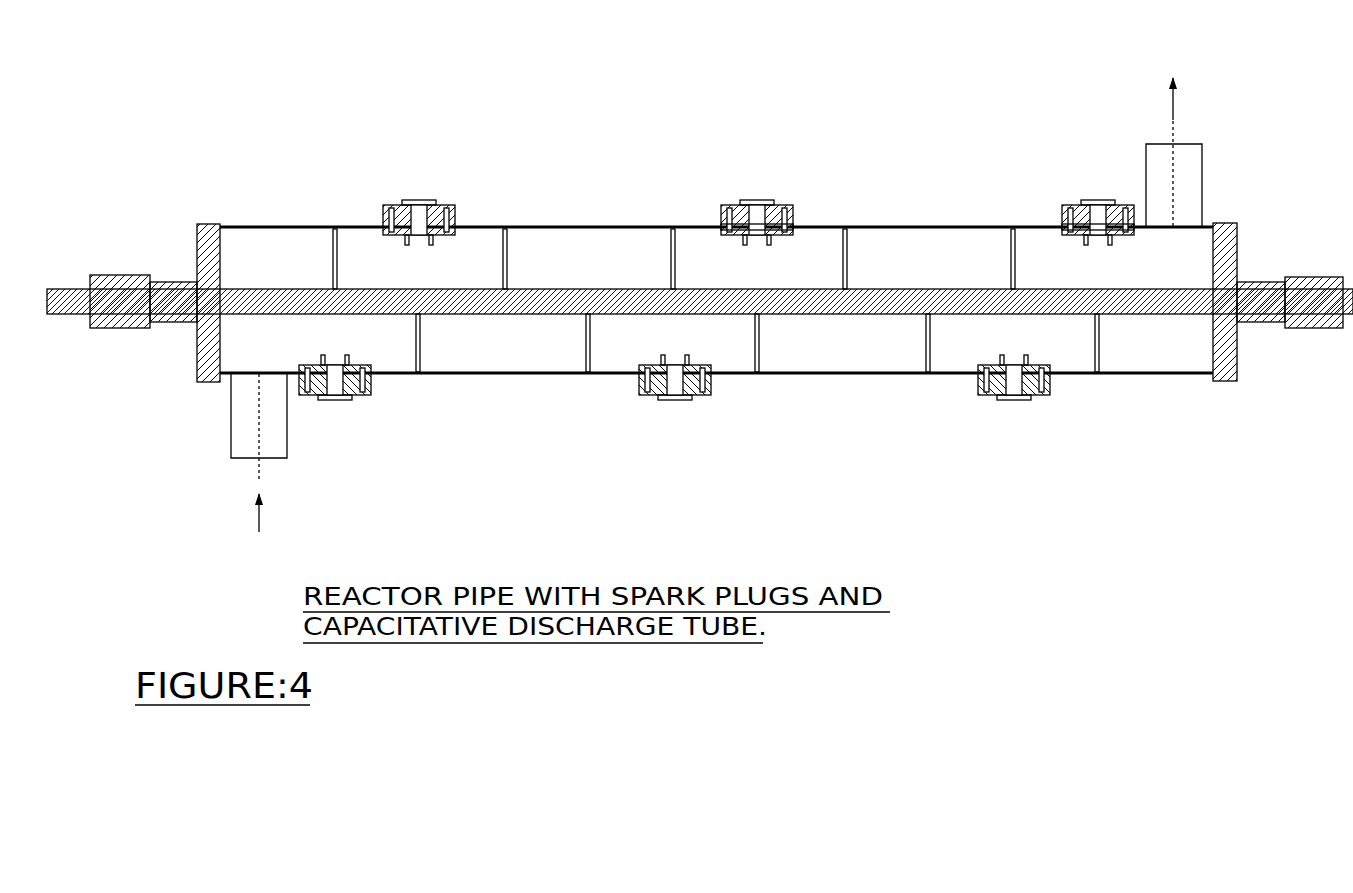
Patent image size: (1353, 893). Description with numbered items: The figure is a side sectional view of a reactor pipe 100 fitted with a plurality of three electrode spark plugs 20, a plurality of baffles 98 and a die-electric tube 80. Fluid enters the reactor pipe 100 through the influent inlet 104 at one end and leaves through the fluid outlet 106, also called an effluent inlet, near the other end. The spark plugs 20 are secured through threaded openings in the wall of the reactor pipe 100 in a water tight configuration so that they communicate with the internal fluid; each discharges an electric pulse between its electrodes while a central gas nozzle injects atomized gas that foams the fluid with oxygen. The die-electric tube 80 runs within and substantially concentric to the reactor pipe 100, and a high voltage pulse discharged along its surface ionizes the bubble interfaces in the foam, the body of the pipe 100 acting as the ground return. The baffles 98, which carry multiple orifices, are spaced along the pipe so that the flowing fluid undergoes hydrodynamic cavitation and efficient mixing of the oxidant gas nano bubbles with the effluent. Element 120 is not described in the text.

The three electrode spark plug 20 is at (716, 296).
The die-electric tube 80 is at (700, 229).
The baffle 98 is at (771, 274).
The reactor pipe 100 is at (717, 288).
The influent inlet 104 is at (240, 453).
The fluid outlet 106 is at (1168, 138).
The spark plug seat 120 is at (927, 196).